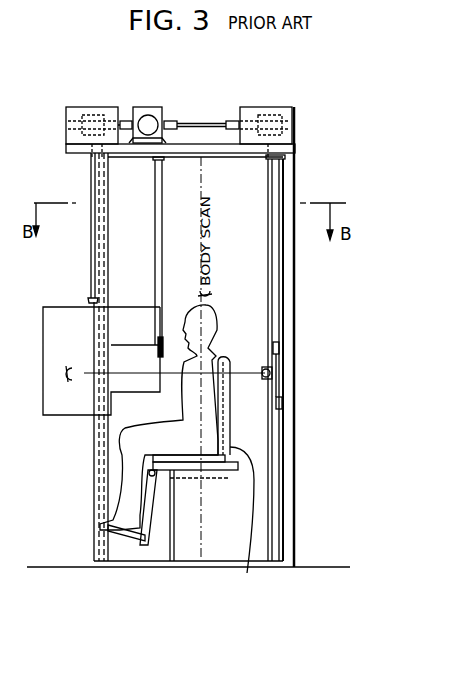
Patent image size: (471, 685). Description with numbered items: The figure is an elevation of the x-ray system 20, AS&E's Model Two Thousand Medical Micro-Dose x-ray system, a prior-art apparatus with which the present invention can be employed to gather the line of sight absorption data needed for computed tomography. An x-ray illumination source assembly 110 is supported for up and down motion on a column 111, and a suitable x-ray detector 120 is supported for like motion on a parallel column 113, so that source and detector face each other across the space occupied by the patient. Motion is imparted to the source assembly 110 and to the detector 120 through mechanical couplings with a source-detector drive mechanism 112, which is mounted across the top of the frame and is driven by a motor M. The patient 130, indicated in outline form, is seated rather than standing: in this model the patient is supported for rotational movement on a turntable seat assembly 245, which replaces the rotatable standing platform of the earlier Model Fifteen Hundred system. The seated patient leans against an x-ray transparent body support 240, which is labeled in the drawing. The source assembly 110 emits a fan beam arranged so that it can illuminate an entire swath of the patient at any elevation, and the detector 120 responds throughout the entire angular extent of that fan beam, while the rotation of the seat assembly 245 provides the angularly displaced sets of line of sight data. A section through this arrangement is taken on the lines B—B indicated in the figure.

The x-ray system 20 is at (76, 188).
The source-detector drive mechanism 112 is at (66, 125).
The motor M is at (162, 118).
The column 111 is at (91, 266).
The parallel column 113 is at (268, 244).
The x-ray illumination source assembly 110 is at (43, 376).
The patient 130 is at (215, 321).
The x-ray detector 120 is at (262, 369).
The turntable seat assembly 245 is at (207, 365).
The x-ray transparent body support 240 is at (281, 504).